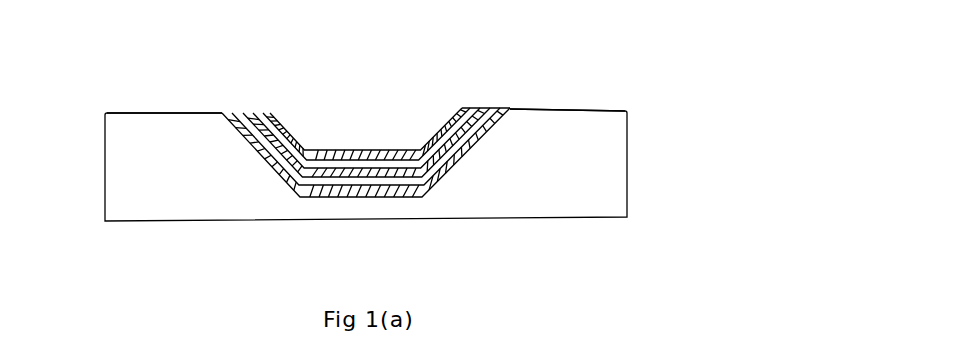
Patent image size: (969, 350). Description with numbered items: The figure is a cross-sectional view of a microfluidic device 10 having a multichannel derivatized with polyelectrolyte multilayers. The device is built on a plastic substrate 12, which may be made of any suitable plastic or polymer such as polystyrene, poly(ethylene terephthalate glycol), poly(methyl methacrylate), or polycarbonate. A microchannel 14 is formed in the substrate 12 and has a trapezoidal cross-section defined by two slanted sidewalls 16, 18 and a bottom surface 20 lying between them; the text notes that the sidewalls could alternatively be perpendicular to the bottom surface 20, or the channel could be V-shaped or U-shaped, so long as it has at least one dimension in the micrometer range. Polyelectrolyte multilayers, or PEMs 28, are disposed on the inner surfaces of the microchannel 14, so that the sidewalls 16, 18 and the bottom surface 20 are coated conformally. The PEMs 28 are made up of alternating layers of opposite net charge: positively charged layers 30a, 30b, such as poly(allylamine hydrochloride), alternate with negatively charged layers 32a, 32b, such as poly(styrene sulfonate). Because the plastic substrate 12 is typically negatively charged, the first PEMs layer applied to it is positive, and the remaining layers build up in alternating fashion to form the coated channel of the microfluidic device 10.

The microfluidic device 10 is at (78, 229).
The plastic substrate 12 is at (612, 171).
The microchannel 14 is at (438, 103).
The slanted sidewall 16 is at (233, 116).
The slanted sidewall 18 is at (517, 111).
The bottom surface 20 is at (365, 198).
The polyelectrolyte multilayers (PEMs) 28 is at (514, 103).
The positively charged layer 30a is at (224, 113).
The negatively charged layer 32a is at (233, 113).
The positively charged layer 30b is at (254, 113).
The negatively charged layer 32b is at (266, 113).